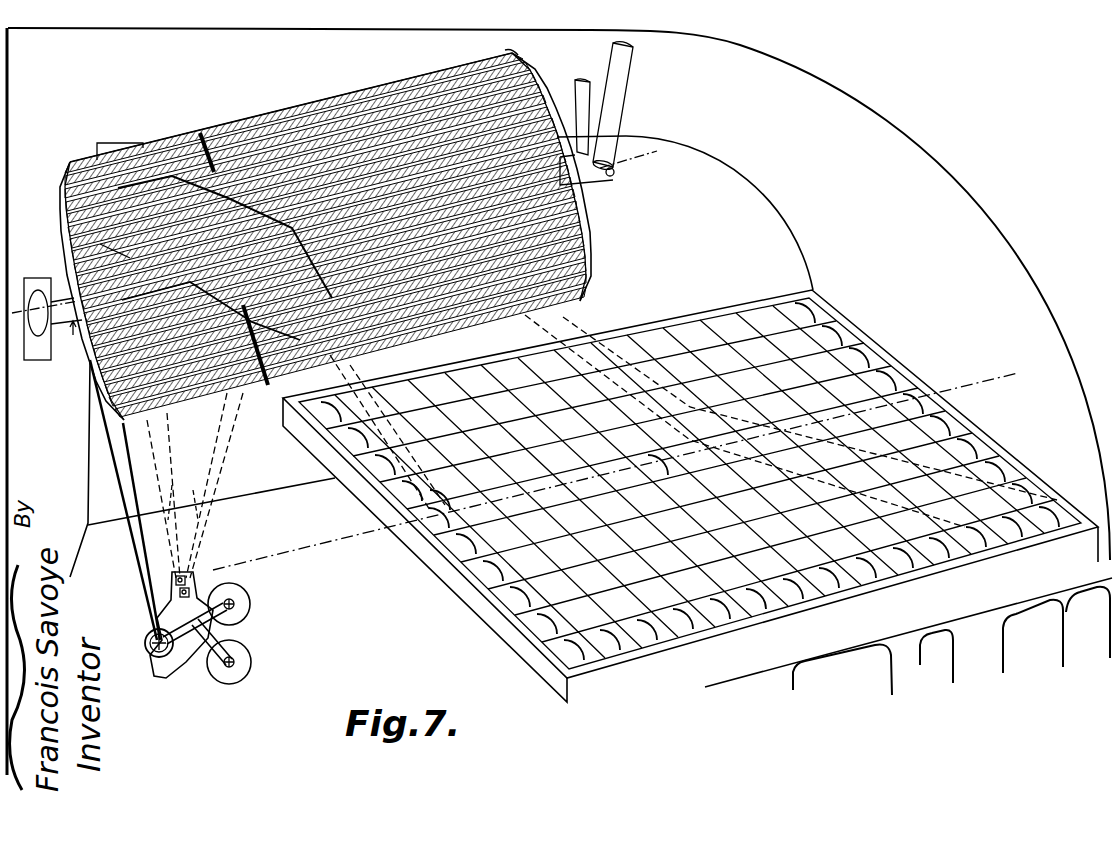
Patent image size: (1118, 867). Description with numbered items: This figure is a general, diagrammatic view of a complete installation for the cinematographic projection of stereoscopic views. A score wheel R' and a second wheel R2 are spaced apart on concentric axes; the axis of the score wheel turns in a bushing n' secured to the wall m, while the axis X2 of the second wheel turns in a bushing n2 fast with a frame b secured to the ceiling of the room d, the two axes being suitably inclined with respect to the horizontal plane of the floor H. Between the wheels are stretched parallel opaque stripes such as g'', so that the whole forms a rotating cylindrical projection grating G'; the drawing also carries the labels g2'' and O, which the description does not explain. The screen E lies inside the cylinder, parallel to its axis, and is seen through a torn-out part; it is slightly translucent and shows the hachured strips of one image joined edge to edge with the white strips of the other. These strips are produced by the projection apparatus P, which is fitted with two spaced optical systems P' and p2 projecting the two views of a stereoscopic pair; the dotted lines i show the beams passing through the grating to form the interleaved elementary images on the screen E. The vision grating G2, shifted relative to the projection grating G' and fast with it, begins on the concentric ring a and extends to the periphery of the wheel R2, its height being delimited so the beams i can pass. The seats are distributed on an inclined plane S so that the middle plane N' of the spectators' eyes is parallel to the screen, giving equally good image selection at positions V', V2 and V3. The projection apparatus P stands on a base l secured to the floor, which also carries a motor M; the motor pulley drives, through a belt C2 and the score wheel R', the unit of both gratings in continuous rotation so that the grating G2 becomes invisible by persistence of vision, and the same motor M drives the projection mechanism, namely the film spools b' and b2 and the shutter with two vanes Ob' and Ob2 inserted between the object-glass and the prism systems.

The cylindrical projection grating G' is at (133, 130).
The vision grating G2 is at (413, 90).
The parallel opaque stripe g'' is at (83, 276).
The right rim of drum g2'' is at (539, 50).
The shaft / axis rod O is at (198, 133).
The screen E is at (98, 245).
The score wheel R' is at (47, 290).
The second wheel R2 is at (586, 256).
The bushing n' is at (50, 336).
The bushing n2 is at (618, 176).
The wall m is at (62, 470).
The frame b is at (621, 106).
The axis of second wheel X2 is at (592, 178).
The ceiling of the room d is at (685, 187).
The concentric ring a is at (264, 388).
The beams of light i is at (195, 485).
The floor H is at (268, 504).
The belt C2 is at (138, 556).
The base l is at (152, 664).
The motor M is at (145, 648).
The projection apparatus P is at (181, 626).
The optical system P' is at (172, 628).
The second optical system p2 is at (172, 574).
The shutter vane Ob2 is at (200, 570).
The shutter vane Ob' is at (218, 570).
The film spool b2 is at (238, 600).
The film spool b' is at (238, 652).
The inclined plane S is at (530, 640).
The middle plane of the spectators' eyes N' is at (615, 474).
The spectator position V' is at (436, 488).
The spectator position V2 is at (660, 463).
The spectator position V3 is at (1057, 503).